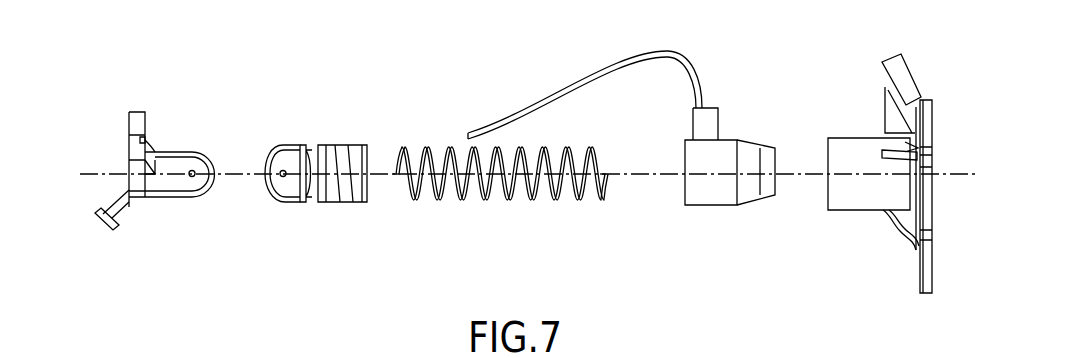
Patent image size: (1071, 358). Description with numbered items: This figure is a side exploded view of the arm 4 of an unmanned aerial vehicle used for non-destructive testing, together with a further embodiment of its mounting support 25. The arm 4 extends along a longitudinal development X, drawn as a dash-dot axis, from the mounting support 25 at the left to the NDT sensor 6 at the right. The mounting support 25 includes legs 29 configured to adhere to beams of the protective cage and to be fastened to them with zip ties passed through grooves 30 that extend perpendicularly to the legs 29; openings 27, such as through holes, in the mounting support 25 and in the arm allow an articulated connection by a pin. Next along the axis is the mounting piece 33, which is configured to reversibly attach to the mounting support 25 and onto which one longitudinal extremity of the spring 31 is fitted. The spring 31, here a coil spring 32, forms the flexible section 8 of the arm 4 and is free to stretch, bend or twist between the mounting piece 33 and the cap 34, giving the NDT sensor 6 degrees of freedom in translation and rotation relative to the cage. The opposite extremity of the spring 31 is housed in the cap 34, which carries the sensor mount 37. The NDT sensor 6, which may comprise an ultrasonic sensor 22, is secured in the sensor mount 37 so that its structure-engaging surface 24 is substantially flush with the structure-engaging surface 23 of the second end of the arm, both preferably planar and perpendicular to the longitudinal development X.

The arm 4 is at (403, 62).
The NDT sensor 6 is at (633, 143).
The flexible section 8 is at (500, 214).
The ultrasonic sensor 22 is at (752, 157).
The structure-engaging surface 23 is at (932, 263).
The structure-engaging surface 24 is at (777, 187).
The mounting support 25 is at (187, 112).
The openings 27 is at (192, 177).
The legs 29 is at (132, 123).
The grooves 30 is at (146, 140).
The spring 31 is at (433, 199).
The coil spring 32 is at (557, 197).
The mounting piece 33 is at (332, 203).
The cap 34 is at (828, 195).
The sensor mount 37 is at (932, 95).
The longitudinal development X is at (640, 177).